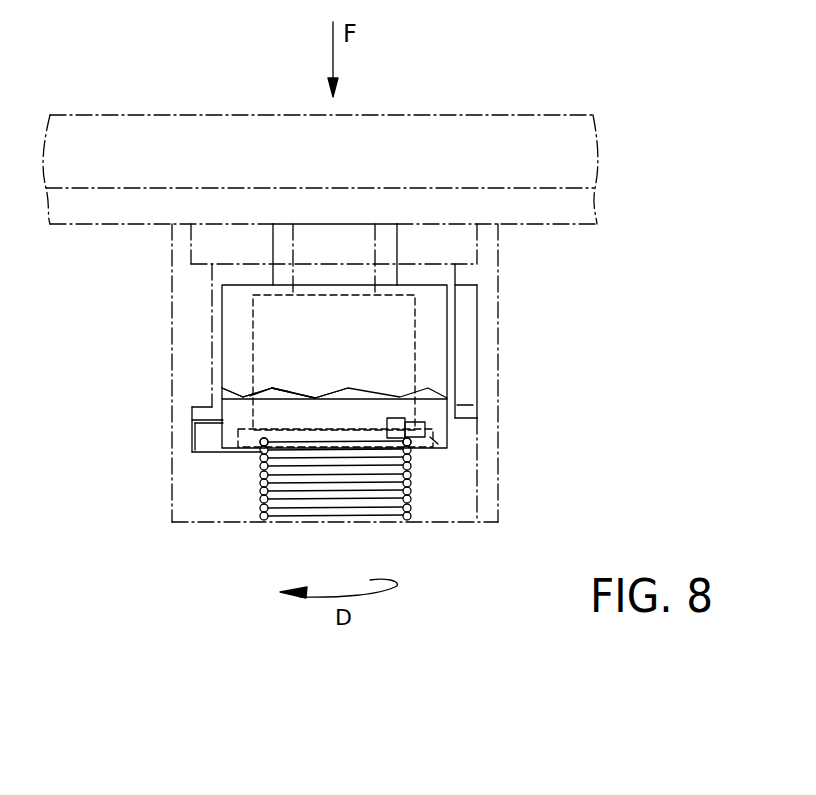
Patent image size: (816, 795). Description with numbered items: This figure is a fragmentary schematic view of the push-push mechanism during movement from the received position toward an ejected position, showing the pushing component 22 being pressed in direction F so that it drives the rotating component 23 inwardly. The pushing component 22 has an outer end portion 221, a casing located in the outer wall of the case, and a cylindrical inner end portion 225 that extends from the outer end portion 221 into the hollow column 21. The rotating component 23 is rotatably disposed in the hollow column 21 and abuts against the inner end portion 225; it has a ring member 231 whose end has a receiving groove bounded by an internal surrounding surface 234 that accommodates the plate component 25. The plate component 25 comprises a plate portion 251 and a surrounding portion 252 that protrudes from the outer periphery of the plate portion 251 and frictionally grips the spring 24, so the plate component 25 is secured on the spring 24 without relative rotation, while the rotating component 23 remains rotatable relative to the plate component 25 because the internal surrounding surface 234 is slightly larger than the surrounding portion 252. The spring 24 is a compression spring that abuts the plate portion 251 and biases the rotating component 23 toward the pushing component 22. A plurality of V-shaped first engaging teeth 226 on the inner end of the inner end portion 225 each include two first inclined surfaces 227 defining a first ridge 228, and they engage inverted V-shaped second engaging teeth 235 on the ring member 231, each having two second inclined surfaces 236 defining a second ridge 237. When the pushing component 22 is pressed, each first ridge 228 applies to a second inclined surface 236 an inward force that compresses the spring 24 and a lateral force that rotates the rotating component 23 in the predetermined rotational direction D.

The hollow column 21 is at (485, 274).
The pushing component 22 is at (390, 113).
The outer end portion 221 is at (432, 134).
The inner end portion 225 is at (397, 244).
The rotating component 23 is at (448, 428).
The ring member 231 is at (450, 432).
The internal surrounding surface 234 is at (449, 443).
The second engaging teeth 235 is at (290, 392).
The second inclined surfaces 236 is at (275, 395).
The second ridge 237 is at (270, 396).
The first engaging teeth 226 is at (310, 388).
The first inclined surfaces 227 is at (306, 397).
The first ridge 228 is at (313, 393).
The spring 24 is at (264, 512).
The plate component 25 is at (426, 452).
The plate portion 251 is at (378, 433).
The surrounding portion 252 is at (370, 450).